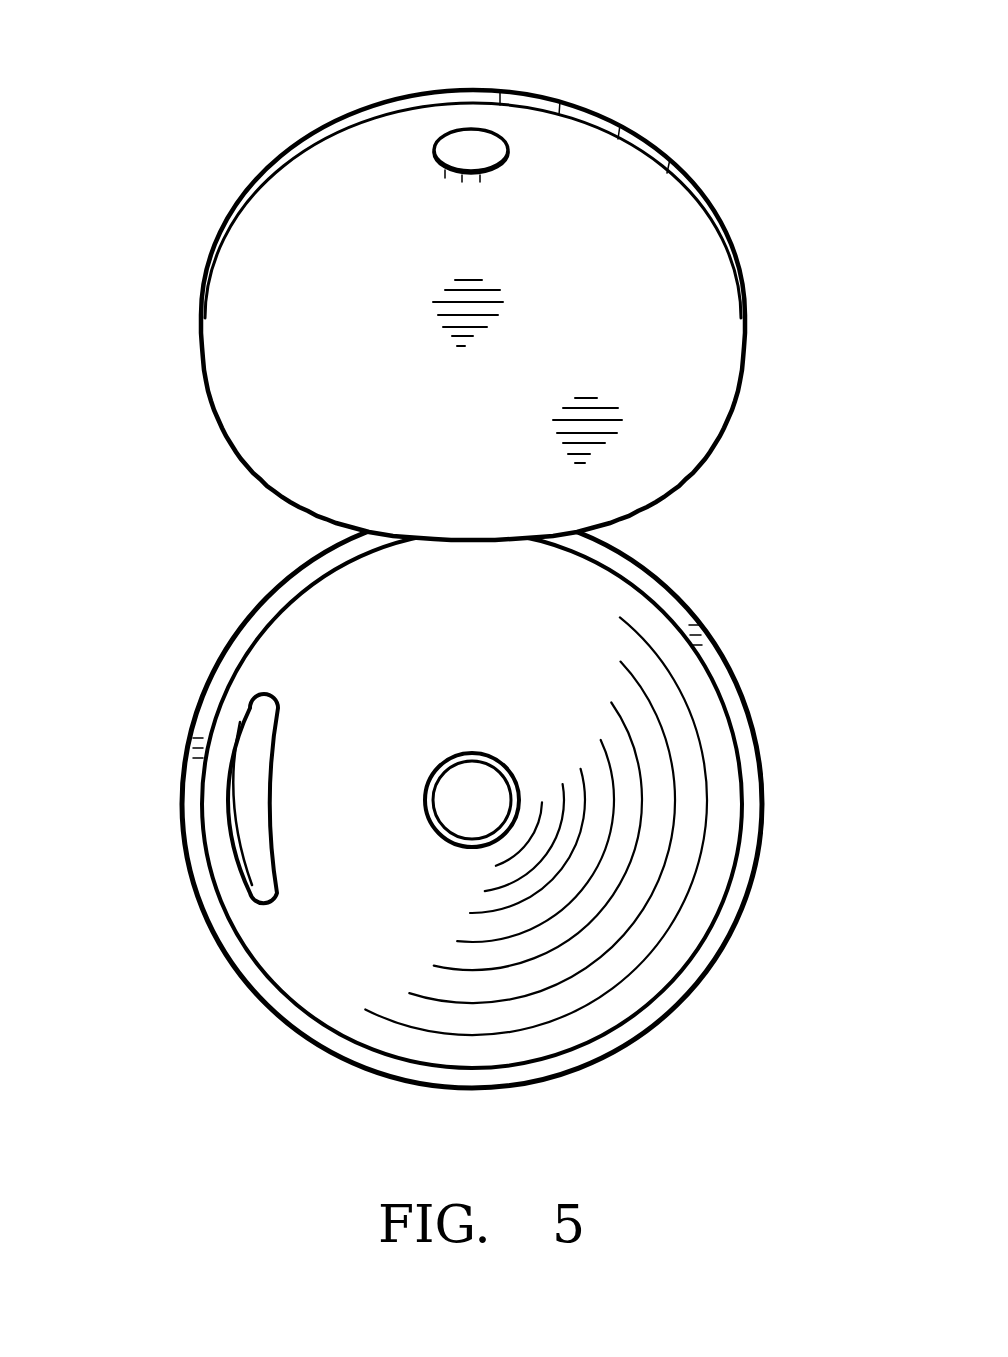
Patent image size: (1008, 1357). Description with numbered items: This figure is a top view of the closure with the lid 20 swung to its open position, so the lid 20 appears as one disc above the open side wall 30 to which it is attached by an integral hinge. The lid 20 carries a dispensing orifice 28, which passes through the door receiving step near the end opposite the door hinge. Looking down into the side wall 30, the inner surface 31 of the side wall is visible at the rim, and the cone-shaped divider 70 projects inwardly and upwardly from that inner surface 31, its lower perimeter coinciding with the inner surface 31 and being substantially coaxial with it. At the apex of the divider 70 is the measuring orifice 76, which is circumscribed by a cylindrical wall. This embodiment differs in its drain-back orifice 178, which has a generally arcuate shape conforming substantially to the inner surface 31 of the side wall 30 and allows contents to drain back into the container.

The lid 20 is at (293, 257).
The dispensing orifice 28 is at (492, 156).
The side wall 30 is at (747, 790).
The inner surface 31 is at (297, 998).
The divider 70 is at (574, 610).
The measuring orifice 76 is at (461, 775).
The drain-back orifice 178 is at (245, 725).